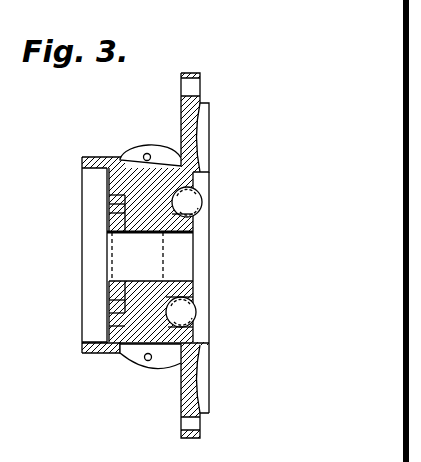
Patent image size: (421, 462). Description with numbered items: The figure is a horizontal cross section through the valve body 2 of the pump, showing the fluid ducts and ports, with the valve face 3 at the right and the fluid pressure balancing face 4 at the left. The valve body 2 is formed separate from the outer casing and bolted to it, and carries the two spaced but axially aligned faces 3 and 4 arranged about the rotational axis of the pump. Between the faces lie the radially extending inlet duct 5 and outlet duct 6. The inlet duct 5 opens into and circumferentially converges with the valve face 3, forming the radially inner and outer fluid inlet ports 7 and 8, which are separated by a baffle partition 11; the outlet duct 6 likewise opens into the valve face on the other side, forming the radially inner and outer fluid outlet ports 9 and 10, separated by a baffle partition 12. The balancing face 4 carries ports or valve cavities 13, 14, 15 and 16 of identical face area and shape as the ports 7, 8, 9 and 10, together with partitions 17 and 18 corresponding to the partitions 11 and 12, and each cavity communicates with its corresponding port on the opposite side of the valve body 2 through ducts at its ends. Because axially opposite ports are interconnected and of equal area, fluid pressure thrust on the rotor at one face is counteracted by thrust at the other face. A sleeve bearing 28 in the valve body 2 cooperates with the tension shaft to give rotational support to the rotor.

The valve body 2 is at (182, 107).
The valve face 3 is at (197, 175).
The fluid pressure balancing face 4 is at (110, 182).
The inlet fluid duct 5 is at (140, 188).
The outlet fluid duct 6 is at (140, 330).
The radially inner fluid inlet port 7 is at (192, 212).
The radially outer fluid inlet port 8 is at (184, 184).
The radially inner fluid outlet port 9 is at (190, 298).
The radially outer fluid outlet port 10 is at (190, 328).
The baffle partition 11 is at (190, 210).
The baffle partition 12 is at (186, 308).
The port or valve cavity 13 is at (110, 212).
The port or valve cavity 14 is at (108, 190).
The port or valve cavity 15 is at (108, 305).
The port or valve cavity 16 is at (110, 330).
The baffle partition 17 is at (108, 200).
The baffle partition 18 is at (108, 313).
The sleeve bearing 28 is at (133, 233).